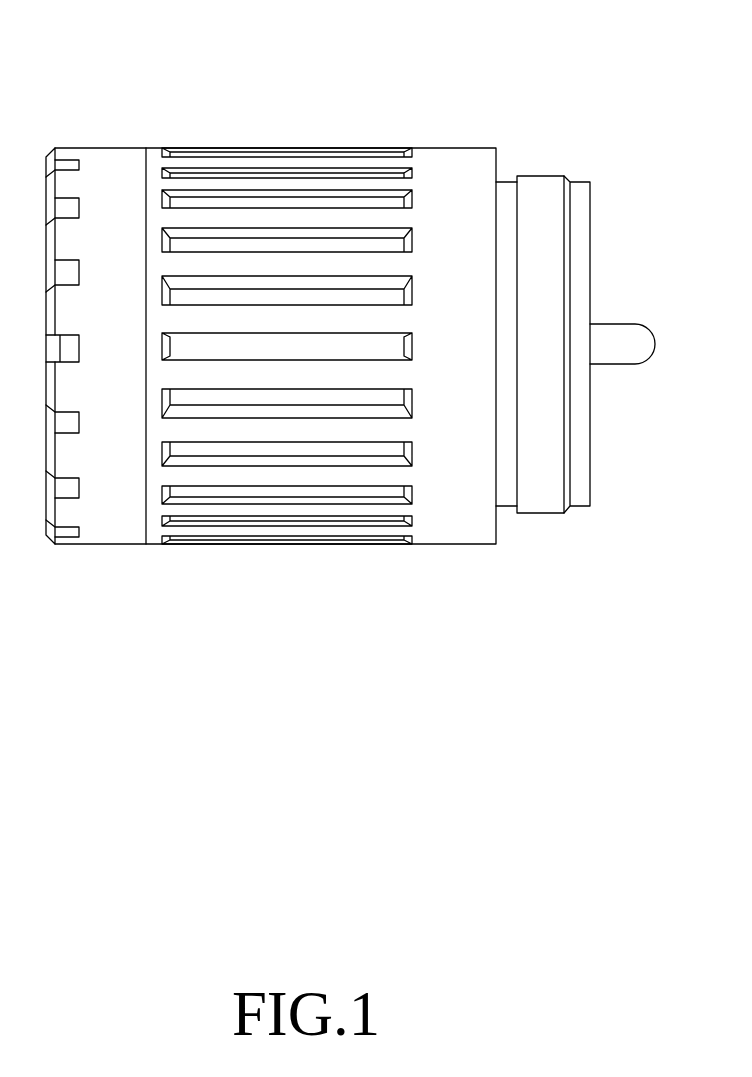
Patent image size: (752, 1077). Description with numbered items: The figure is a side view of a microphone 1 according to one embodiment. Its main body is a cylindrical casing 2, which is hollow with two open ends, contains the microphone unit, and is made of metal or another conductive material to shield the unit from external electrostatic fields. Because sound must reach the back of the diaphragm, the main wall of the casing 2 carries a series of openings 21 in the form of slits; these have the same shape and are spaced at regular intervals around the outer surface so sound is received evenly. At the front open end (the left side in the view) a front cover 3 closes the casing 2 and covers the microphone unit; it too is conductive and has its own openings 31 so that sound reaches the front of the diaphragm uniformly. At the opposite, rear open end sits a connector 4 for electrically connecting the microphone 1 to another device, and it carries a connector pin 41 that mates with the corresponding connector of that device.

The microphone 1 is at (292, 72).
The casing 2 is at (456, 147).
The openings 21 is at (207, 247).
The front cover 3 is at (117, 148).
The openings 31 is at (68, 208).
The connector 4 is at (542, 176).
The connector pin 41 is at (627, 323).